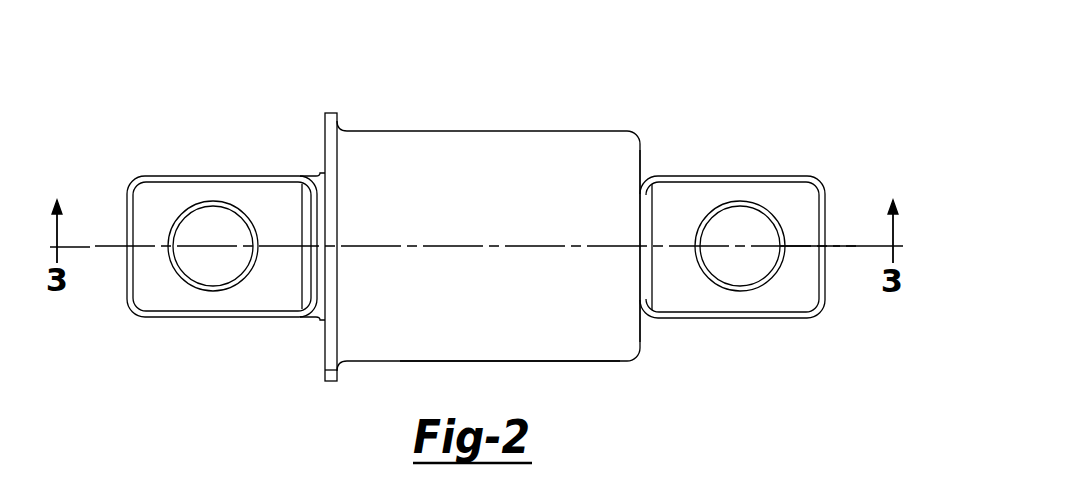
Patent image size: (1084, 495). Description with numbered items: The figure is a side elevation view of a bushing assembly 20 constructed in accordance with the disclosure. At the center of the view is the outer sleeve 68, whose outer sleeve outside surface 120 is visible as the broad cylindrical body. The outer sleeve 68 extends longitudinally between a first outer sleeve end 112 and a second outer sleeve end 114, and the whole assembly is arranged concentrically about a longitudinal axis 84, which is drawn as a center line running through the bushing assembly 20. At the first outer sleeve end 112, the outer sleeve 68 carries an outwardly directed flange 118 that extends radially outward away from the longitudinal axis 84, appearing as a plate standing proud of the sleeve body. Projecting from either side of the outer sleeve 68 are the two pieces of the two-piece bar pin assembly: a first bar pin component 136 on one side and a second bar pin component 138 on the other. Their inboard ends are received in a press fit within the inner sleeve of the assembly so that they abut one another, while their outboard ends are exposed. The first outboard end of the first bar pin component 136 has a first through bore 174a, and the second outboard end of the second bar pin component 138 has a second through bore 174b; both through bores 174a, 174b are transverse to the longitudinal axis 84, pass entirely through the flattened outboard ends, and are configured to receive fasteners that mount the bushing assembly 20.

The bushing assembly 20 is at (492, 70).
The outer sleeve outside surface 120 is at (551, 129).
The first outer sleeve end 112 is at (323, 134).
The second outer sleeve end 114 is at (647, 153).
The outwardly directed flange 118 is at (330, 373).
The first bar pin component 136 is at (187, 192).
The second bar pin component 138 is at (797, 195).
The first through bore 174a is at (220, 268).
The second through bore 174b is at (750, 268).
The longitudinal axis 84 is at (838, 246).
The outer sleeve 68 is at (563, 333).